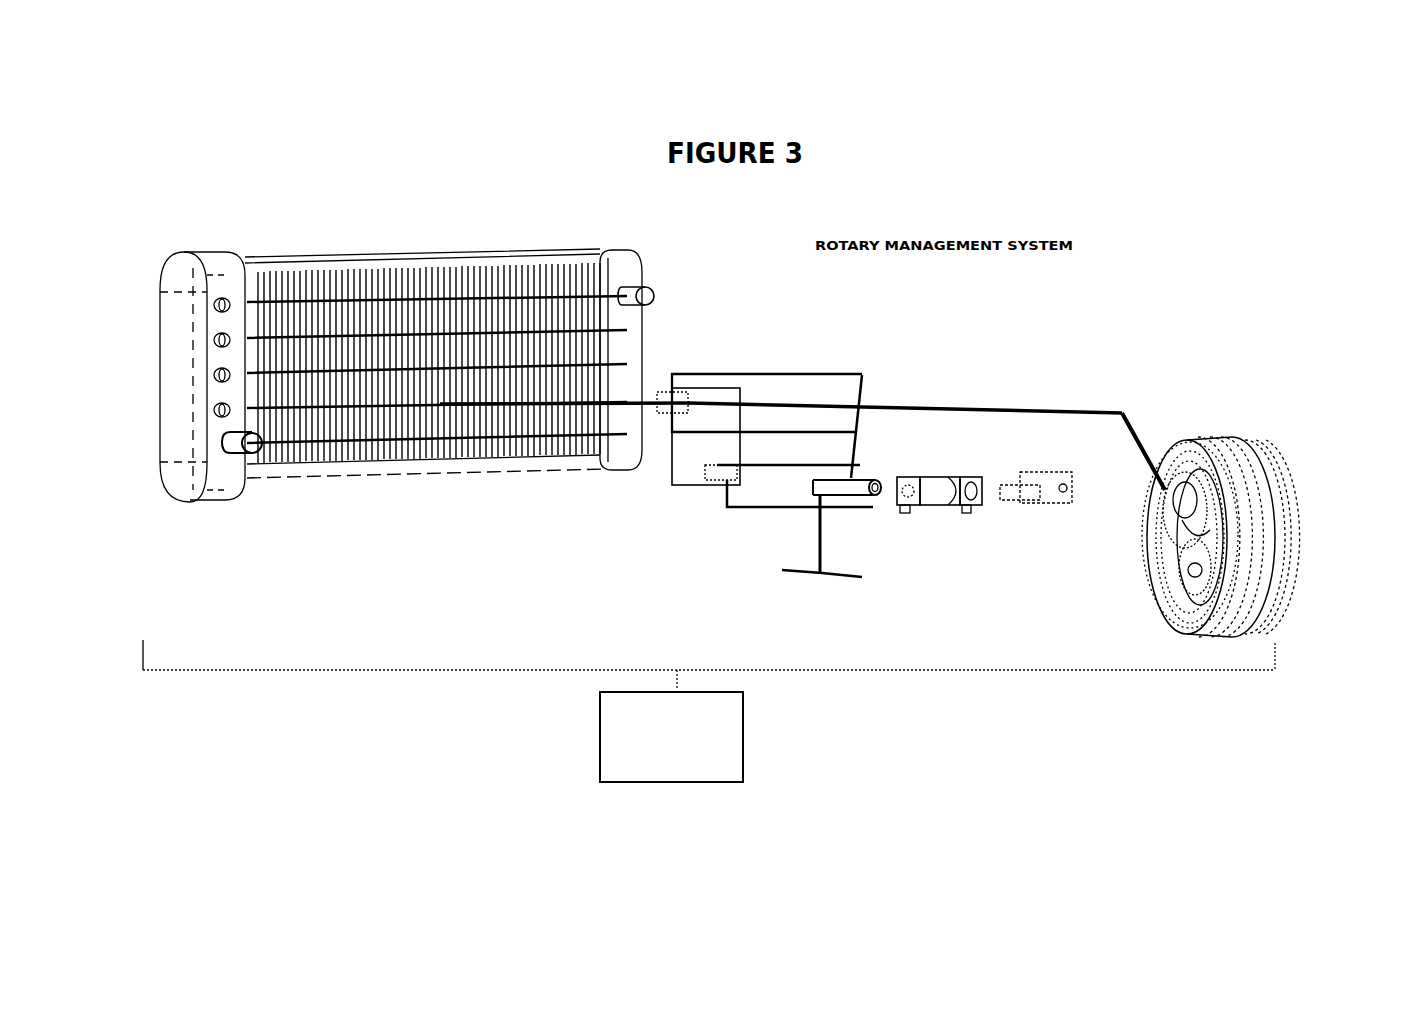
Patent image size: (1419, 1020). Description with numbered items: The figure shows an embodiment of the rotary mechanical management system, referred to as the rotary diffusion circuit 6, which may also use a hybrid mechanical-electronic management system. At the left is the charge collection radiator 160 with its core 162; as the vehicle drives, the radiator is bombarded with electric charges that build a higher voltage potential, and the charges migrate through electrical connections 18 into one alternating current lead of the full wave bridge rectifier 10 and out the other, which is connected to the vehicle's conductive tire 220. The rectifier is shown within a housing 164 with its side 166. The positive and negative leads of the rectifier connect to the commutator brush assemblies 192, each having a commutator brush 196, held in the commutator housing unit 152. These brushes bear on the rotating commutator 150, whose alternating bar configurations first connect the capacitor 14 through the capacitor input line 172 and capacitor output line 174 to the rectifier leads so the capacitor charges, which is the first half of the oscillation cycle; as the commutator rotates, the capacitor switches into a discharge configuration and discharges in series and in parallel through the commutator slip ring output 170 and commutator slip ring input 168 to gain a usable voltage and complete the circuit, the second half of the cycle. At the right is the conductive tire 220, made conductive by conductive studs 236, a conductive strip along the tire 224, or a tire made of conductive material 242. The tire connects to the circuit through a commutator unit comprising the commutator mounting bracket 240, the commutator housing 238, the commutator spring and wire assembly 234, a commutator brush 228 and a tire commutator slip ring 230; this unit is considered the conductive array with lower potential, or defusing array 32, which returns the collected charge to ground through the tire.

The rotary diffusion circuit 6 is at (600, 728).
The full wave bridge rectifier 10 is at (668, 408).
The capacitor 14 is at (720, 490).
The conduit 18 is at (638, 398).
The defusing array 32 is at (1187, 535).
The commutator 150 is at (843, 497).
The commutator housing unit 152 is at (942, 507).
The charge collection radiator 160 is at (630, 272).
The heat exchanger core 162 is at (505, 463).
The rotary management system housing 164 is at (765, 373).
The housing side 166 is at (866, 377).
The commutator slip ring input 168 is at (788, 572).
The commutator slip ring output 170 is at (862, 580).
The capacitor input line 172 is at (876, 480).
The capacitor output line 174 is at (870, 508).
The commutator brush assembly 192 is at (1053, 505).
The commutator brush 196 is at (1027, 505).
The conductive tire 220 is at (1147, 540).
The conductive strip along the tire 224 is at (1255, 592).
The commutator brush 228 is at (1175, 545).
The tire commutator slip ring 230 is at (1195, 500).
The commutator spring and wire assembly 234 is at (1200, 505).
The conductive studs 236 is at (1258, 572).
The commutator housing 238 is at (1177, 497).
The commutator mounting bracket 240 is at (1172, 485).
The conductive material 242 is at (1242, 600).